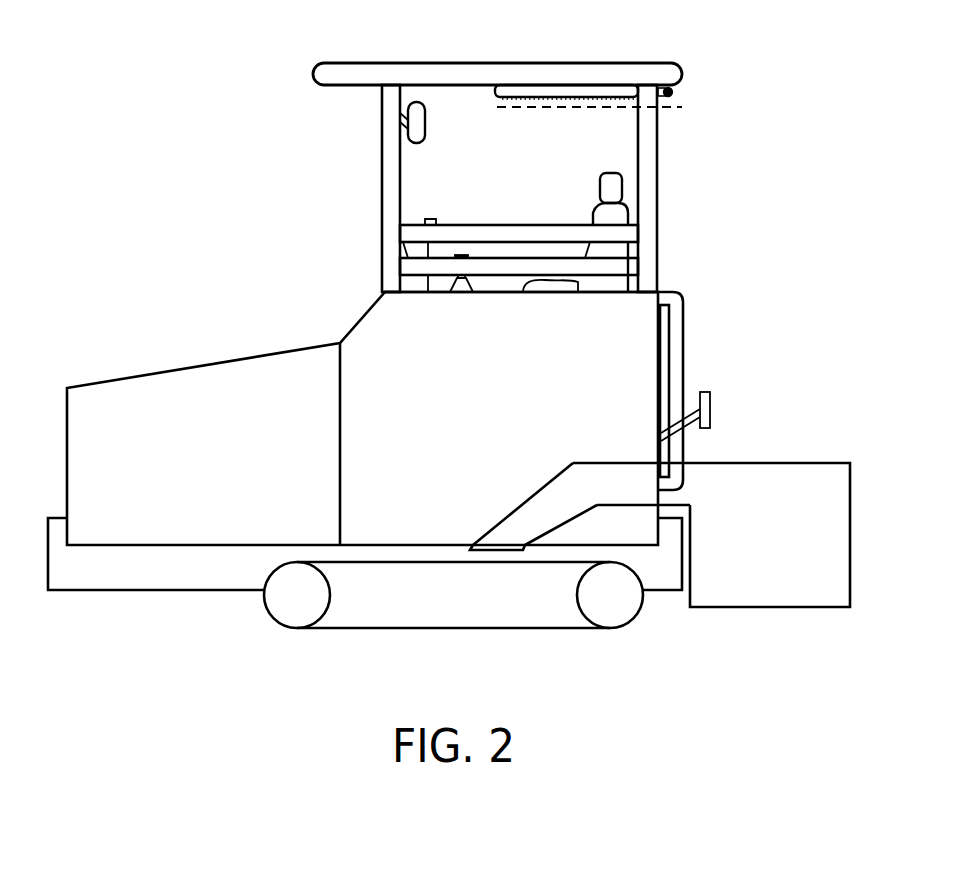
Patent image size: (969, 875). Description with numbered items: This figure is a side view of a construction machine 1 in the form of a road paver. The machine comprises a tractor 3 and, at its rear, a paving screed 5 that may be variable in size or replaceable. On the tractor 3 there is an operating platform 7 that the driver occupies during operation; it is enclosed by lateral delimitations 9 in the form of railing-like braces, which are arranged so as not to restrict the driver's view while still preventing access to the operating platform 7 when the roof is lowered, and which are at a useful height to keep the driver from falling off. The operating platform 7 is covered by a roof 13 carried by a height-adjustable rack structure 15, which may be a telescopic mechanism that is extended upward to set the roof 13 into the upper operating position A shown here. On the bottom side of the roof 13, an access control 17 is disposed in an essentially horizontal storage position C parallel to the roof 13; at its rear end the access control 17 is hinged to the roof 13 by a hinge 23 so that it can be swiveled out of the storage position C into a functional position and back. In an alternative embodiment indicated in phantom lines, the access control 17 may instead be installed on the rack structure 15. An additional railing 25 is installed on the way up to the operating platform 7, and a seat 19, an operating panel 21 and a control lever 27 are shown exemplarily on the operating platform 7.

The construction machine 1 is at (228, 232).
The tractor 3 is at (402, 457).
The paving screed 5 is at (808, 462).
The operating platform 7 is at (520, 216).
The lateral delimitations 9 is at (507, 248).
The roof 13 is at (370, 62).
The rack structure 15 is at (382, 184).
The access control 17 is at (492, 88).
The seat 19 is at (597, 205).
The operating panel 21 is at (432, 219).
The hinge 23 is at (669, 101).
The additional railing 25 is at (684, 342).
The control lever 27 is at (452, 281).
The upper operating position A is at (300, 73).
The storage position C is at (490, 105).